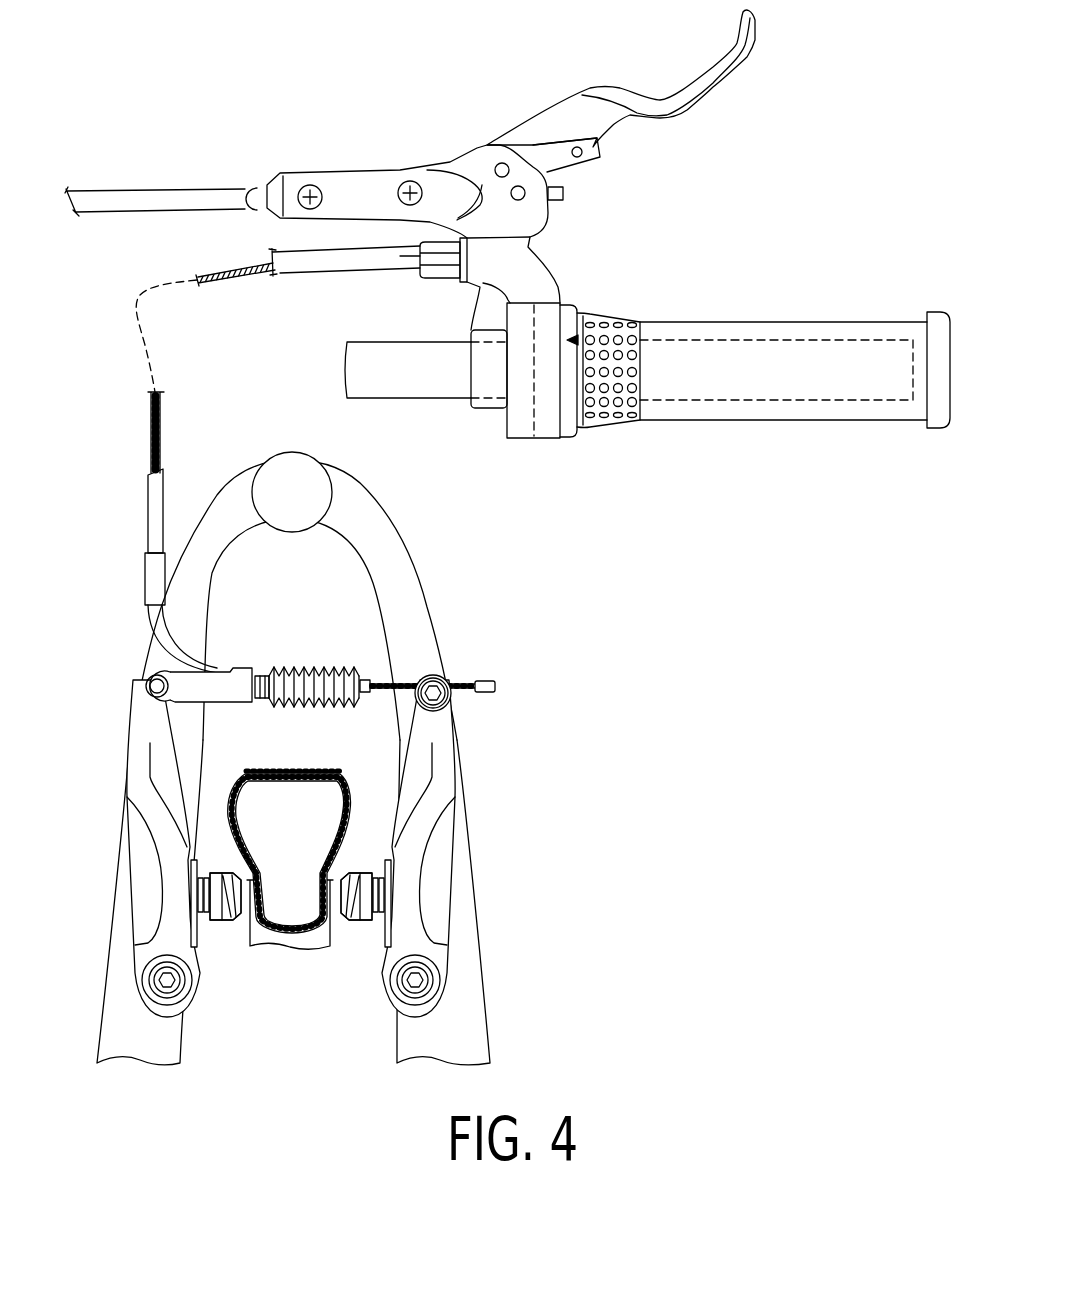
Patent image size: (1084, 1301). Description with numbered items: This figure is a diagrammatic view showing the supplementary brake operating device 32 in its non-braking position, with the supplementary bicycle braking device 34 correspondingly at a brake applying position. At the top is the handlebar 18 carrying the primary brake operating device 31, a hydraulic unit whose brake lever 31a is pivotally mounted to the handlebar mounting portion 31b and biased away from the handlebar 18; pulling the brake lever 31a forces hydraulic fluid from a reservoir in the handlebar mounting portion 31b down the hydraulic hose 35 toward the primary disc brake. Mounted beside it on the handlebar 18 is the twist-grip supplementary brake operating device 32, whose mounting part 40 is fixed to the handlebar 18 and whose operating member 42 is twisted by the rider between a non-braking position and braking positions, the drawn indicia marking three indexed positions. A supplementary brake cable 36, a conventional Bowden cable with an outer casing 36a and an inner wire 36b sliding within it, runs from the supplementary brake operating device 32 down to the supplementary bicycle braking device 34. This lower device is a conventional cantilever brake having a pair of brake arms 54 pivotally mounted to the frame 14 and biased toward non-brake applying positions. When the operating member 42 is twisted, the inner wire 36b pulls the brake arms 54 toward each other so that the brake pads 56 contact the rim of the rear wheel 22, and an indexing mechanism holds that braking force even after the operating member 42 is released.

The frame 14 is at (423, 603).
The handlebar 18 is at (395, 403).
The rear wheel 22 is at (302, 947).
The primary brake operating device 31 is at (546, 170).
The brake lever 31a is at (717, 92).
The handlebar mounting portion 31b is at (368, 168).
The supplementary brake operating device 32 is at (710, 377).
The supplementary bicycle braking device 34 is at (357, 868).
The hydraulic hose 35 is at (155, 187).
The supplementary brake cable 36 is at (301, 455).
The outer casing 36a is at (300, 275).
The inner wire 36b is at (205, 468).
The mounting part 40 is at (522, 440).
The operating member 42 is at (595, 430).
The brake arms 54 is at (120, 767).
The brake pads 56 is at (227, 920).